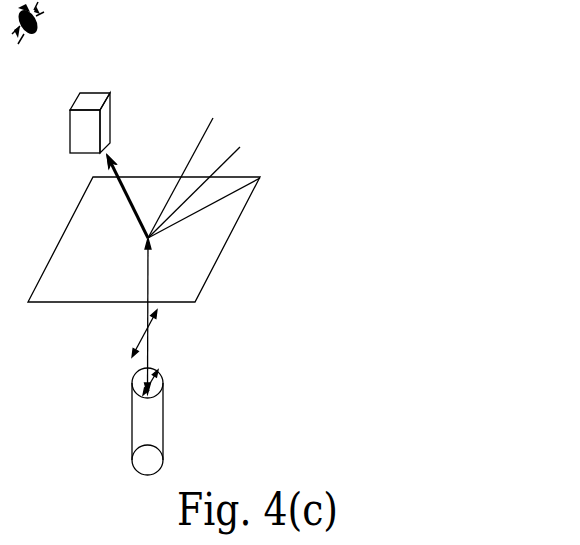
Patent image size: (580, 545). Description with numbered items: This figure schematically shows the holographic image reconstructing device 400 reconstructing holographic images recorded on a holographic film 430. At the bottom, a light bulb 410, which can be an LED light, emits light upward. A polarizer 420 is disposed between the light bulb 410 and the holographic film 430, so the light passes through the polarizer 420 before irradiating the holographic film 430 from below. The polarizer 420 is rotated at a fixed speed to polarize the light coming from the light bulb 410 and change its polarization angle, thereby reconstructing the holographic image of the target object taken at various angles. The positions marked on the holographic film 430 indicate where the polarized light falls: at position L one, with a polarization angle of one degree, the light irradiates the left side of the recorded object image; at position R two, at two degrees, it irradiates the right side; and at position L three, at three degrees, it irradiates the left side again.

The holographic image reconstructing device 400 is at (288, 276).
The light bulb 410 is at (165, 458).
The polarizer 420 is at (163, 373).
The holographic film 430 is at (217, 263).